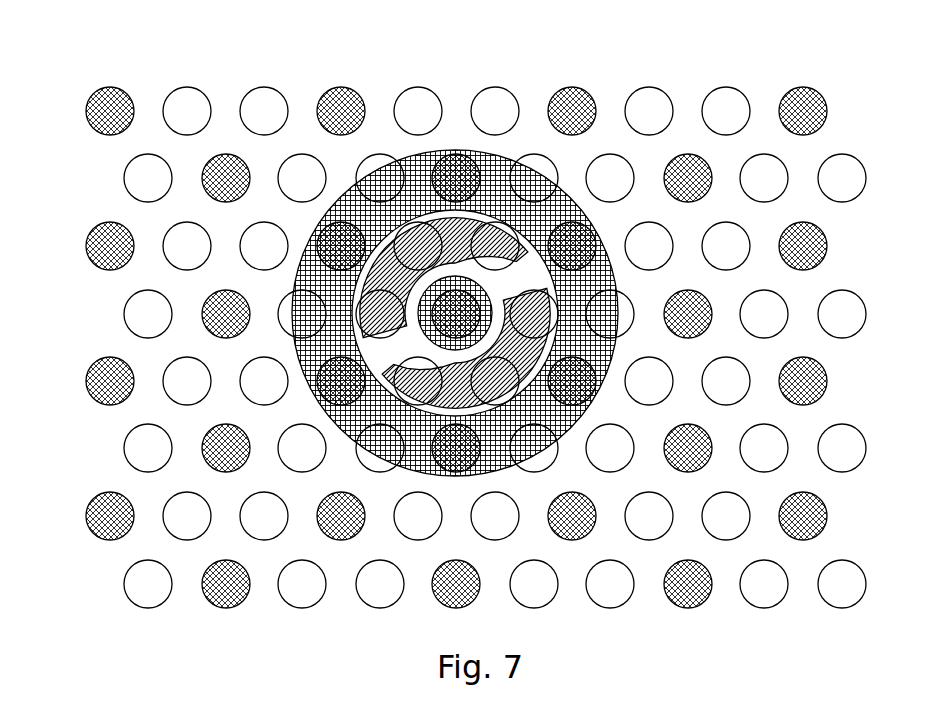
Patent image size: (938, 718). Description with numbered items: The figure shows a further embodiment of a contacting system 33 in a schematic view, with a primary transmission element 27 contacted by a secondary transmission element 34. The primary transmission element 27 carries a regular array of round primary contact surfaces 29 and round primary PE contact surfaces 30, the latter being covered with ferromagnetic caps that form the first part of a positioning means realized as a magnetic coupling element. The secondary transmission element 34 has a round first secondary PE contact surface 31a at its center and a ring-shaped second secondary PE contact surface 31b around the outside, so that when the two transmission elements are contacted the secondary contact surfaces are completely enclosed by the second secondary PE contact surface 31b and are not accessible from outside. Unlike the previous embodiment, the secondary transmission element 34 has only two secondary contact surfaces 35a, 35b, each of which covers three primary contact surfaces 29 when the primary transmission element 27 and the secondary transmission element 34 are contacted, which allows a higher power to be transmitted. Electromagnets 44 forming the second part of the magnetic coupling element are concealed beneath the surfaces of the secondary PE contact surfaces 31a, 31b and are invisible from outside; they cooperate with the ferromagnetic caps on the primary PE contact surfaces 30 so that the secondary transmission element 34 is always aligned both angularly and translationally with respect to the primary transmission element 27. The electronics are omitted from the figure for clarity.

The primary transmission element 27 is at (81, 83).
The primary contact surfaces 29 is at (181, 518).
The primary PE contact surfaces 30 is at (456, 590).
The first secondary PE contact surface 31a is at (492, 320).
The second secondary PE contact surface 31b is at (560, 210).
The contacting system 33 is at (104, 580).
The secondary transmission element 34 is at (482, 250).
The first secondary contact surface 35a is at (455, 232).
The second secondary contact surface 35b is at (527, 338).
The electromagnets 44 is at (342, 387).